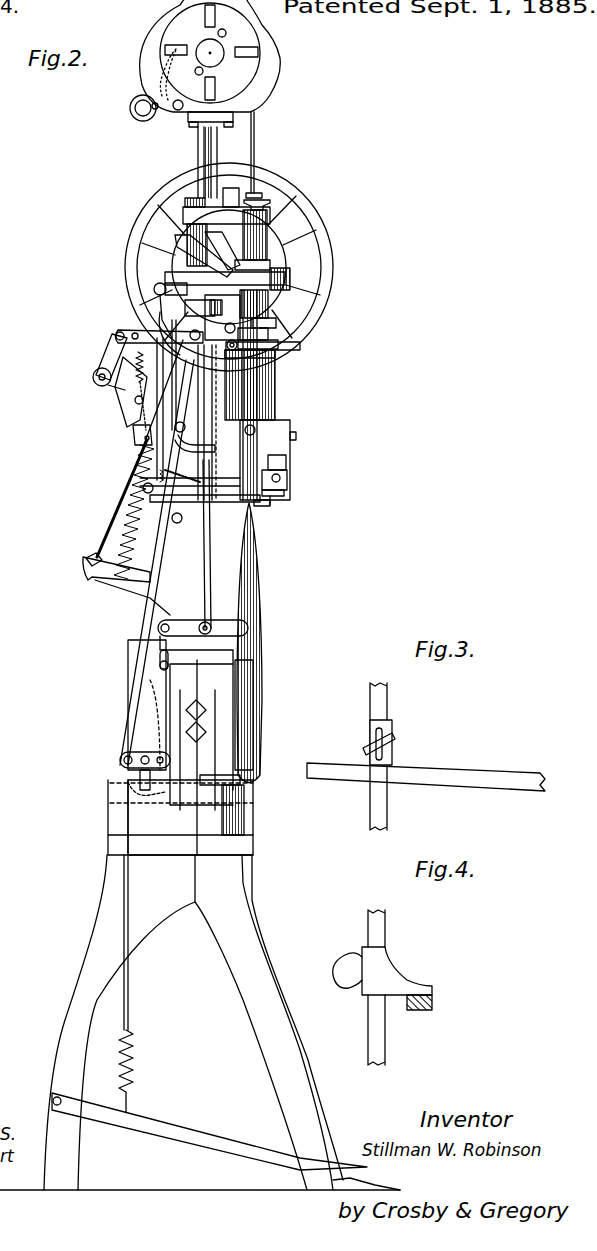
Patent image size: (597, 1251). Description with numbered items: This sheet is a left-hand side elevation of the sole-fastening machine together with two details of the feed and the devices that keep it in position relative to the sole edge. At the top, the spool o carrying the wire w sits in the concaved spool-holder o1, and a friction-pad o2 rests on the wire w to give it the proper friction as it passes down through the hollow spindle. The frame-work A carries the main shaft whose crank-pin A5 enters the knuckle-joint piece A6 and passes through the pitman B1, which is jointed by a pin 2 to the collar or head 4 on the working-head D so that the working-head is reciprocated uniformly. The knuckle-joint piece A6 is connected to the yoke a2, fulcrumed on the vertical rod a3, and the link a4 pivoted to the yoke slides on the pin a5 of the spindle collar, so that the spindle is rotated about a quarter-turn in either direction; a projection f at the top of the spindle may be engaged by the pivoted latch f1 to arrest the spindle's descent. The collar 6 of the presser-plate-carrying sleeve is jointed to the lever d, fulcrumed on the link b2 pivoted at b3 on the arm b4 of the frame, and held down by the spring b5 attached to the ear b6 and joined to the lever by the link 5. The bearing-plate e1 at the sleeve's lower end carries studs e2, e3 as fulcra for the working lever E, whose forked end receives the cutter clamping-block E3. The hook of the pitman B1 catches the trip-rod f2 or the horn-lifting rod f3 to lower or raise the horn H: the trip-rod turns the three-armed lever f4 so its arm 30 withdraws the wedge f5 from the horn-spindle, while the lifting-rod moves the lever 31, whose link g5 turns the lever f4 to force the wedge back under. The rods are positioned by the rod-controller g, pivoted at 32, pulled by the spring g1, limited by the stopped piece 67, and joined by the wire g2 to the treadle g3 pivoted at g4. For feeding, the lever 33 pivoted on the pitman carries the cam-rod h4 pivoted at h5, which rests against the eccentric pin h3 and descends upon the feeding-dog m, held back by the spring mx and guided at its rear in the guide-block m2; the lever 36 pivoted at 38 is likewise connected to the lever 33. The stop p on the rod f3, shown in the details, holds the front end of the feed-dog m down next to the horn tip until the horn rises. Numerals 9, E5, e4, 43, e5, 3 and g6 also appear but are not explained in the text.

In FIG. 2, the spool o is at (210, 53).
In FIG. 2, the spool-holder o1 is at (214, 63).
In FIG. 2, the friction-pad o2 is at (130, 110).
In FIG. 2, the wire w is at (230, 155).
In FIG. 2, the projection f is at (272, 198).
In FIG. 2, the pivoted latch f1 is at (240, 196).
In FIG. 2, the frame-work A is at (296, 375).
In FIG. 2, the yoke a2 is at (178, 262).
In FIG. 2, the vertical rod a3 is at (176, 238).
In FIG. 2, the link a4 is at (272, 290).
In FIG. 2, the pin a5 is at (300, 302).
In FIG. 2, the crank-pin A5 is at (220, 260).
In FIG. 2, the knuckle-joint piece A6 is at (240, 262).
In FIG. 2, the pivot h5 is at (160, 295).
In FIG. 2, the lever 33 is at (185, 306).
In FIG. 2, the cam-rod h4 is at (172, 318).
In FIG. 2, the lever 36 is at (160, 312).
In FIG. 2, the lever d is at (160, 335).
In FIG. 2, the link b2 is at (110, 352).
In FIG. 2, the pivot b3 is at (93, 377).
In FIG. 2, the arm b4 is at (108, 385).
In FIG. 2, the piece 67 is at (127, 395).
In FIG. 2, the spring g1 is at (135, 391).
In FIG. 2, the link 5 is at (166, 409).
In FIG. 2, the rod 9 is at (163, 389).
In FIG. 2, the rod-controller g is at (140, 427).
In FIG. 2, the pivot 38 is at (205, 333).
In FIG. 2, the pin 2 is at (228, 342).
In FIG. 2, the pitman B1 is at (222, 317).
In FIG. 2, the collar 6 is at (274, 322).
In FIG. 2, the collar 3 is at (270, 333).
In FIG. 2, the collar or head 4 is at (280, 345).
In FIG. 2, the working-head D is at (266, 388).
In FIG. 2, the bearing-plate e1 is at (250, 420).
In FIG. 2, the pin E5 is at (256, 430).
In FIG. 2, the block e4 is at (290, 435).
In FIG. 2, the screw 43 is at (296, 440).
In FIG. 2, the stud e3 is at (286, 462).
In FIG. 2, the stud e2 is at (282, 475).
In FIG. 2, the working lever E is at (280, 486).
In FIG. 2, the clamping-block E3 is at (284, 492).
In FIG. 2, the foot e5 is at (265, 500).
In FIG. 2, the feeding-dog m is at (200, 494).
In FIG. 3, the feeding-dog m is at (426, 773).
In FIG. 4, the feeding-dog m is at (429, 1002).
In FIG. 2, the pivot 32 is at (188, 435).
In FIG. 2, the spring mx is at (160, 474).
In FIG. 2, the eccentric pin h3 is at (118, 498).
In FIG. 2, the spring b5 is at (92, 547).
In FIG. 2, the ear b6 is at (126, 586).
In FIG. 2, the guide-block m2 is at (172, 518).
In FIG. 2, the trip-rod f2 is at (163, 569).
In FIG. 2, the horn-lifting rod f3 is at (204, 595).
In FIG. 3, the horn-lifting rod f3 is at (389, 700).
In FIG. 4, the horn-lifting rod f3 is at (387, 926).
In FIG. 2, the horn H is at (259, 643).
In FIG. 2, the lever 31 is at (203, 628).
In FIG. 2, the wire g2 is at (180, 762).
In FIG. 2, the slot bolt g6 is at (156, 664).
In FIG. 2, the link g5 is at (160, 690).
In FIG. 2, the three-armed lever f4 is at (135, 766).
In FIG. 2, the arm 30 is at (140, 778).
In FIG. 2, the wedge f5 is at (150, 800).
In FIG. 2, the treadle g3 is at (200, 1022).
In FIG. 2, the pivot g4 is at (52, 1100).
In FIG. 3, the stop p is at (394, 750).
In FIG. 4, the stop p is at (382, 971).